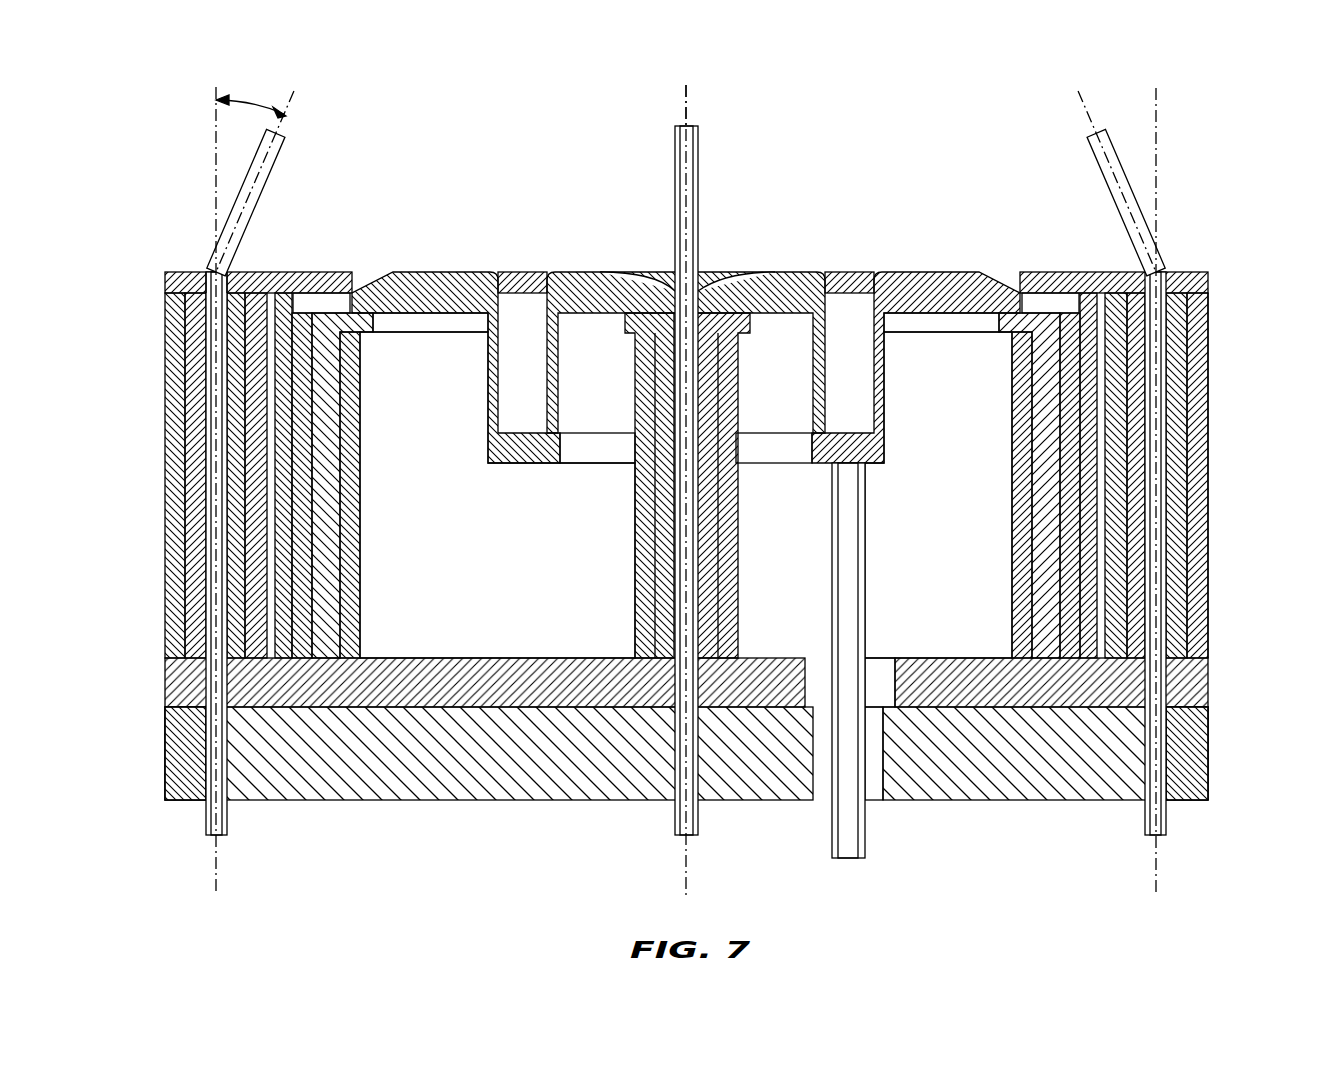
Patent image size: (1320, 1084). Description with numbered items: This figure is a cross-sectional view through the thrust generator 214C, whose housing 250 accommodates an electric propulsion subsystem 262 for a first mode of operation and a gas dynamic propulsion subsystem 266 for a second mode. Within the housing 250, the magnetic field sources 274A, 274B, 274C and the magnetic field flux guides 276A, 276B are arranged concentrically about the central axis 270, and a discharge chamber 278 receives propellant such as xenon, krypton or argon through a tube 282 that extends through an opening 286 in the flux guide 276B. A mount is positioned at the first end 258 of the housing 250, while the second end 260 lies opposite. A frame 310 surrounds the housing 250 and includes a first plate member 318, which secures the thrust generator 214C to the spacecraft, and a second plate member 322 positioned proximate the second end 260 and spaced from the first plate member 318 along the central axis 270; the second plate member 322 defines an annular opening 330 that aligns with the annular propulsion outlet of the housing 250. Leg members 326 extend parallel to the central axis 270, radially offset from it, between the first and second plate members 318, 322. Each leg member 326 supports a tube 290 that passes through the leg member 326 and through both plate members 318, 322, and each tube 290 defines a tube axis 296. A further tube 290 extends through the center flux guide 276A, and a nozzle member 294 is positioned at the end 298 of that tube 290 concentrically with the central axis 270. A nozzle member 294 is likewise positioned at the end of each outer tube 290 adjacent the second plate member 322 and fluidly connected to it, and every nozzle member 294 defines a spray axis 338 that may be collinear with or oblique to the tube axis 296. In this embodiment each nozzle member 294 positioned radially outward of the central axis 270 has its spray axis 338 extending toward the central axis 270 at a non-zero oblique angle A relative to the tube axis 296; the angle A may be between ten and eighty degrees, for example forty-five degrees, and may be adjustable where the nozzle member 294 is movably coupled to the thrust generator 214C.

The thrust generator 214C is at (396, 118).
The housing 250 is at (1092, 515).
The first end 258 is at (1070, 660).
The second end 260 is at (1188, 272).
The electric propulsion subsystem 262 is at (306, 295).
The gas dynamic propulsion subsystem 266 is at (1210, 140).
The central axis 270 is at (687, 855).
The magnetic field source 274A is at (340, 618).
The magnetic field source 274B is at (352, 380).
The magnetic field source 274C is at (730, 507).
The center magnetic field flux guide 276A is at (340, 428).
The magnetic field flux guide 276B is at (1050, 683).
The discharge chamber 278 is at (443, 517).
The tube 282 is at (867, 613).
The opening 286 is at (882, 688).
The tube 290 is at (200, 400).
The nozzle member 294 is at (242, 195).
The tube axis 296 is at (216, 858).
The end of the tube 298 is at (763, 276).
The frame 310 is at (1238, 328).
The first plate member 318 is at (383, 782).
The second plate member 322 is at (185, 272).
The leg member 326 is at (175, 305).
The annular opening 330 is at (413, 272).
The spray axis 338 is at (272, 188).
The oblique angle A is at (251, 94).